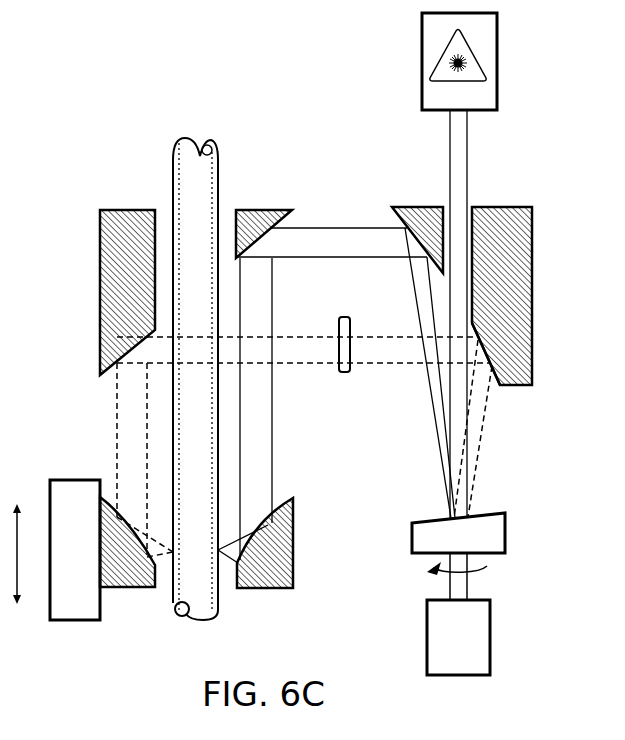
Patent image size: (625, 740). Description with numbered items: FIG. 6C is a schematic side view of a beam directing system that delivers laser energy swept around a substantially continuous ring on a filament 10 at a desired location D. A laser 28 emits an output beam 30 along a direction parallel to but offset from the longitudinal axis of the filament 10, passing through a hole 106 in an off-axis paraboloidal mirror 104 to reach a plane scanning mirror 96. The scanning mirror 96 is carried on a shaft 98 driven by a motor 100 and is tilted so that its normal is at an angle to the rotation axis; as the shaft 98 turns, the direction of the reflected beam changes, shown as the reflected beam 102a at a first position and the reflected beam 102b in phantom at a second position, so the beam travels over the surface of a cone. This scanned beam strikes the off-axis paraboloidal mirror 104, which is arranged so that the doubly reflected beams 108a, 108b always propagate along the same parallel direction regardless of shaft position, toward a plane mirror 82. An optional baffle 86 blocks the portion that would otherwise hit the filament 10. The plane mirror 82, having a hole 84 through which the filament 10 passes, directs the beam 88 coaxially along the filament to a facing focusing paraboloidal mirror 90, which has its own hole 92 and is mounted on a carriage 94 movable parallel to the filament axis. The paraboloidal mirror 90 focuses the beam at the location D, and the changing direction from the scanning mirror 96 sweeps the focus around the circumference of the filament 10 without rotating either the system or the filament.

The filament 10 is at (173, 165).
The laser 28 is at (422, 55).
The output beam 30 is at (447, 147).
The plane mirror 82 is at (262, 208).
The hole 84 is at (228, 212).
The baffle 86 is at (345, 372).
The reflected beam 88 is at (117, 445).
The paraboloidal mirror 90 is at (293, 542).
The hole 92 is at (163, 583).
The carriage 94 is at (75, 620).
The plane scanning mirror 96 is at (505, 531).
The shaft 98 is at (467, 590).
The motor 100 is at (485, 650).
The reflected beam at first position 102a is at (437, 442).
The reflected beam at second position 102b is at (477, 445).
The off-axis paraboloidal mirror 104 is at (497, 375).
The hole 106 is at (472, 205).
The doubly reflected beam at first position 108a is at (380, 227).
The doubly reflected beam at second position 108b is at (388, 338).
The desired location D is at (222, 552).